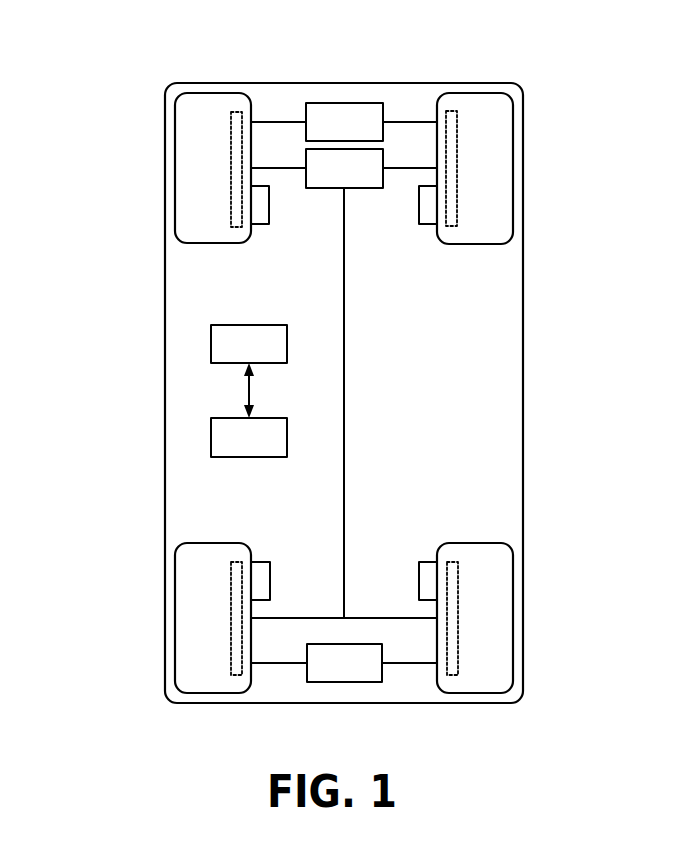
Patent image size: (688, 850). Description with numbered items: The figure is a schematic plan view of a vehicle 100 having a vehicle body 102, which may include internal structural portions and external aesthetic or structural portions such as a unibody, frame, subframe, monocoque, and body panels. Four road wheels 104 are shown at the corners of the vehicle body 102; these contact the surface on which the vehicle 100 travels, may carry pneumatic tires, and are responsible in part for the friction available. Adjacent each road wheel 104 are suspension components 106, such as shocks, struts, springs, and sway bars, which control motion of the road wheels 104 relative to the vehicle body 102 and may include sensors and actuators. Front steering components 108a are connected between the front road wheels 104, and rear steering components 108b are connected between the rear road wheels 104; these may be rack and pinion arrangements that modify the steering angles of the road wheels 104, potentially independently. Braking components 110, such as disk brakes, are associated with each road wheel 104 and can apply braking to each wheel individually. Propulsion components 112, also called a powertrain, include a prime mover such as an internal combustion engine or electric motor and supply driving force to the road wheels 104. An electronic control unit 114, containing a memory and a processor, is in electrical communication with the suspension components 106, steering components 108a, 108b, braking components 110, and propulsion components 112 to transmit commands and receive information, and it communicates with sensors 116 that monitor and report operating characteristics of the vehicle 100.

The vehicle 100 is at (137, 57).
The vehicle body 102 is at (493, 83).
The road wheels 104 is at (175, 116).
The suspension components 106 is at (262, 226).
The front steering components 108a is at (320, 132).
The rear steering components 108b is at (320, 673).
The braking components 110 is at (231, 186).
The propulsion components 112 is at (326, 178).
The electronic control unit 114 is at (231, 354).
The sensors 116 is at (231, 447).